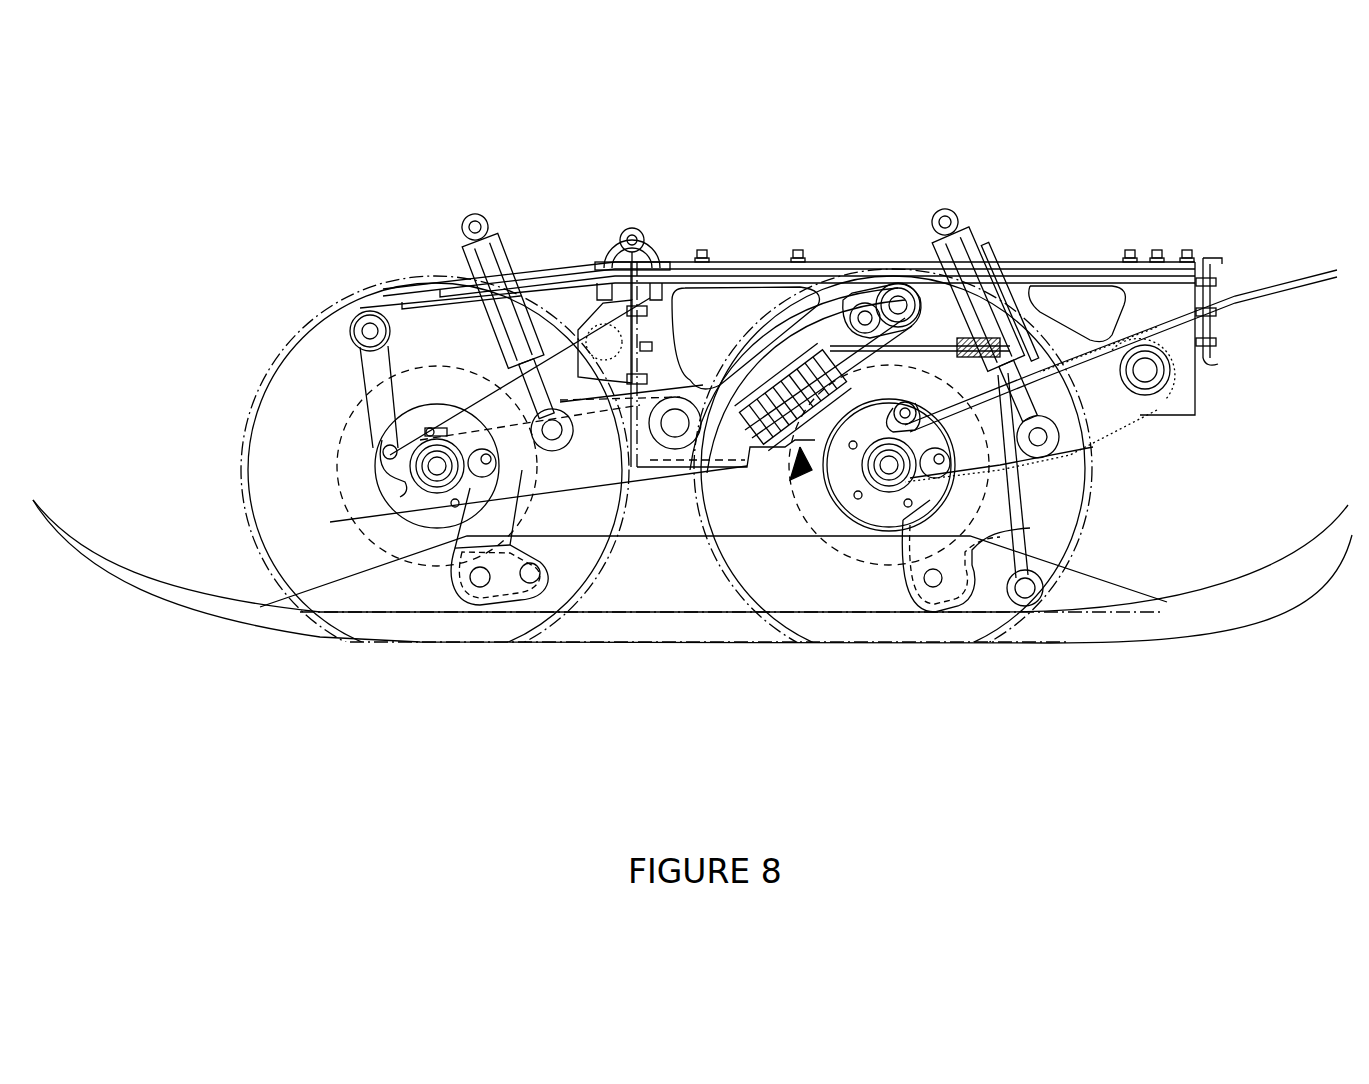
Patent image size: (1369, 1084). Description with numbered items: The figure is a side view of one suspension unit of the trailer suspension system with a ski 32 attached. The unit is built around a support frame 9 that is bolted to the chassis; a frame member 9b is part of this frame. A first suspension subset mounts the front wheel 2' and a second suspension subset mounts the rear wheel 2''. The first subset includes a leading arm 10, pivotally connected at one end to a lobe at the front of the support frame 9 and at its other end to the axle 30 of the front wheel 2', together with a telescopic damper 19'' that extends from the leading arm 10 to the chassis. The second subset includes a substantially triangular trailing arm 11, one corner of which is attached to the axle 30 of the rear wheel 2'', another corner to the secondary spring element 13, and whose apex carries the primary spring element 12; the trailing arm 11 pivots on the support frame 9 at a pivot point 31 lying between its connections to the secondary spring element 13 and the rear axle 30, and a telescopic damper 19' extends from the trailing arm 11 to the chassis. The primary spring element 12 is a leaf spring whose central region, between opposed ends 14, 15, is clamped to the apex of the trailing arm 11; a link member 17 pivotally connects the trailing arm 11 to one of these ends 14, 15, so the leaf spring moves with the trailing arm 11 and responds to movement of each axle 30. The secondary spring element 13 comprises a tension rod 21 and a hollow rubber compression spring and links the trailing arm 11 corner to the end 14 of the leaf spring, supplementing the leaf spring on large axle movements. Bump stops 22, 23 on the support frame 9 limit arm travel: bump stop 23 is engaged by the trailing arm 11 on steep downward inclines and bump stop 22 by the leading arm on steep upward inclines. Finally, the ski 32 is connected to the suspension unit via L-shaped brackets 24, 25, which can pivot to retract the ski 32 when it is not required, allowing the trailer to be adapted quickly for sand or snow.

The front wheel 2' is at (916, 468).
The rear wheel 2'' is at (409, 470).
The support frame 9 is at (1022, 270).
The frame member 9b is at (646, 462).
The leading arm 10 is at (1115, 430).
The trailing arm 11 is at (597, 465).
The primary spring element 12 is at (737, 262).
The secondary spring element 13 is at (800, 462).
The end of primary spring element 14 is at (900, 410).
The end of primary spring element 15 is at (362, 322).
The link member 17 is at (365, 368).
The telescopic damper 19' is at (478, 319).
The telescopic damper 19'' is at (1032, 321).
The tension rod 21 is at (853, 387).
The bump stop 22 is at (1022, 600).
The bump stop 23 is at (612, 395).
The L-shaped bracket 24 is at (975, 595).
The L-shaped bracket 25 is at (503, 593).
The axle 30 is at (433, 470).
The pivot point 31 is at (676, 450).
The ski 32 is at (1212, 600).